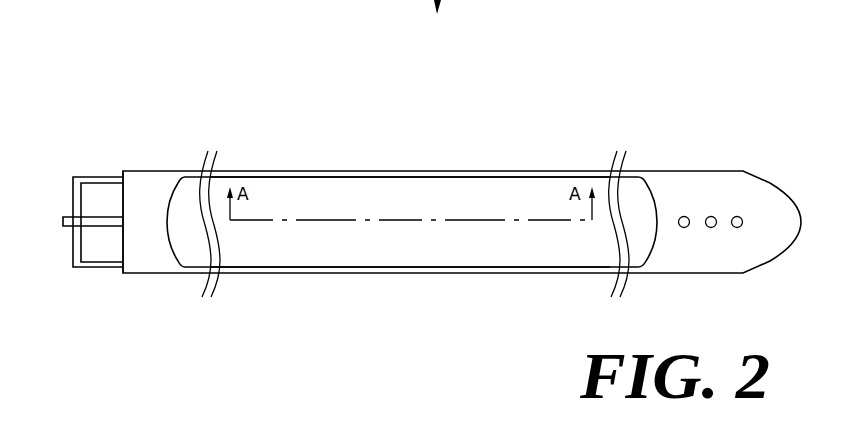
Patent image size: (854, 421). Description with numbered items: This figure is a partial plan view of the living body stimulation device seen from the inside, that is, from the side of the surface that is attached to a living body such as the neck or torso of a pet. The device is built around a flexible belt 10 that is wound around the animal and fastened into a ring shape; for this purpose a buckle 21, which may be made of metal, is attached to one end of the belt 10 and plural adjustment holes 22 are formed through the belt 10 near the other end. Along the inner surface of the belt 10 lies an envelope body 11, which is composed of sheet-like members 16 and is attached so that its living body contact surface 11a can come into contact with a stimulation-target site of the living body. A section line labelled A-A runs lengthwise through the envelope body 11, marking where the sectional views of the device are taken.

The belt 10 is at (171, 162).
The envelope body 11 is at (508, 165).
The living body contact surface 11a is at (440, 193).
The sheet-like members 16 is at (390, 247).
The buckle 21 is at (100, 177).
The adjustment holes 22 is at (712, 215).